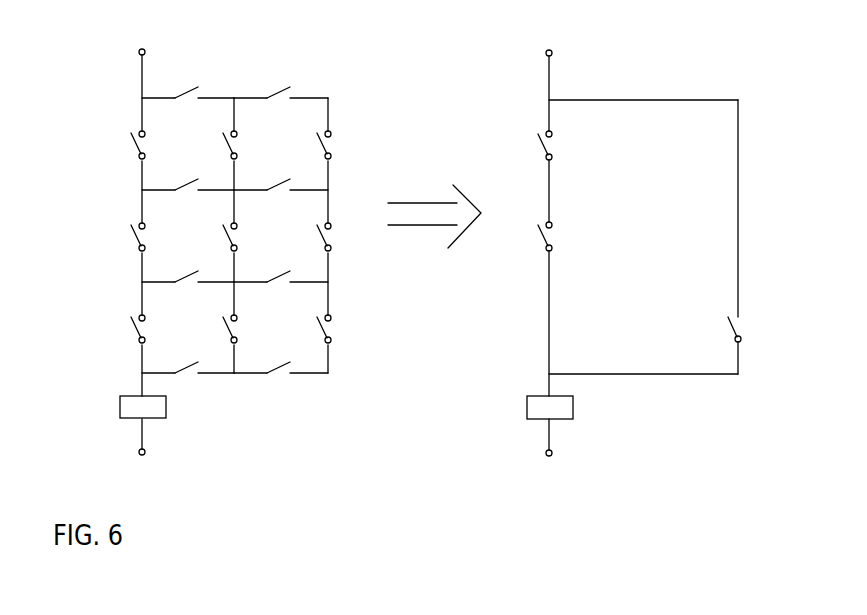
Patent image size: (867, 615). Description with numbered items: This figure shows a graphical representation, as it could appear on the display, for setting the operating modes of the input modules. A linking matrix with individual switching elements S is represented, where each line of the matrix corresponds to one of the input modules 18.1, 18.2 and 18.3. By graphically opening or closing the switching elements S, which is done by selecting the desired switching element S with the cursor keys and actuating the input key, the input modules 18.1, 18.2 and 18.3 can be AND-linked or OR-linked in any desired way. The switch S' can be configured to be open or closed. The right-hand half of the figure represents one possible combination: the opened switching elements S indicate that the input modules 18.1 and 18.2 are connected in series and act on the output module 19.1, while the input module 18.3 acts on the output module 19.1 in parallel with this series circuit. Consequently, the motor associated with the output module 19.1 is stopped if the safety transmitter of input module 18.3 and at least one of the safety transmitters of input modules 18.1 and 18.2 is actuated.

The input module 18.1 is at (133, 147).
The input module 18.2 is at (133, 240).
The input module 18.3 is at (130, 335).
The output module 19.1 is at (118, 413).
The switching element S is at (357, 124).
The switch S' is at (281, 53).